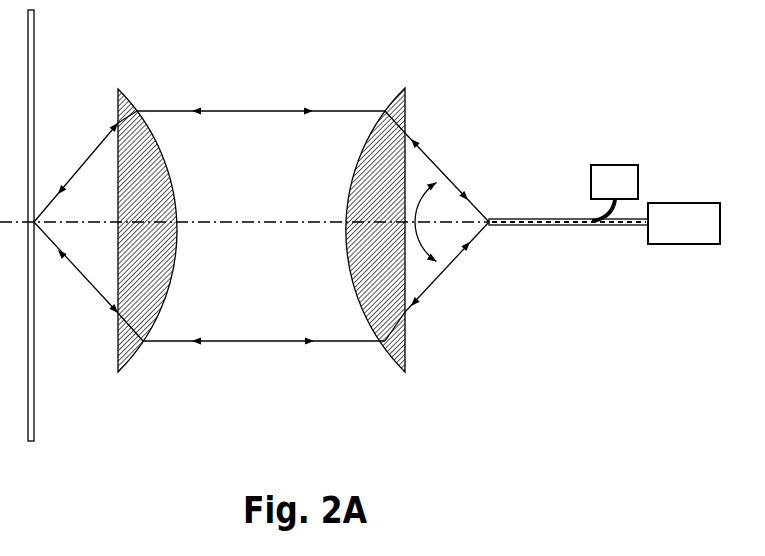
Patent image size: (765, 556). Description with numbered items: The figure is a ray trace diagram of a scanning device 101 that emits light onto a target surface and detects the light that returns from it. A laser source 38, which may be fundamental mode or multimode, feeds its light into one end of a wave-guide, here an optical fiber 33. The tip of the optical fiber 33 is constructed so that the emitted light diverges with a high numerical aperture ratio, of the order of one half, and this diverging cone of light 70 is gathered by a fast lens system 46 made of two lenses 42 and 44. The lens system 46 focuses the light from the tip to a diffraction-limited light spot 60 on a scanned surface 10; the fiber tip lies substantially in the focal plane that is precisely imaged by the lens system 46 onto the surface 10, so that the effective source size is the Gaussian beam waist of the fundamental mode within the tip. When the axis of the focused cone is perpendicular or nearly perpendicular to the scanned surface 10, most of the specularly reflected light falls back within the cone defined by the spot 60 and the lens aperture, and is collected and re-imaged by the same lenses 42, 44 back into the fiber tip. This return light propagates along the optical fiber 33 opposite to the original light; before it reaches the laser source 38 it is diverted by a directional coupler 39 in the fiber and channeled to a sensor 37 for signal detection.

The scanned surface 10 is at (35, 38).
The light spot 60 is at (34, 223).
The lens 42 is at (159, 280).
The lens 44 is at (394, 280).
The scanning device 101 is at (311, 81).
The fast lens system 46 is at (272, 308).
The collection cone / acceptance angle 70 is at (432, 187).
The optical fiber 33 is at (530, 219).
The sensor 37 is at (601, 193).
The laser source 38 is at (670, 235).
The directional coupler 39 is at (594, 241).